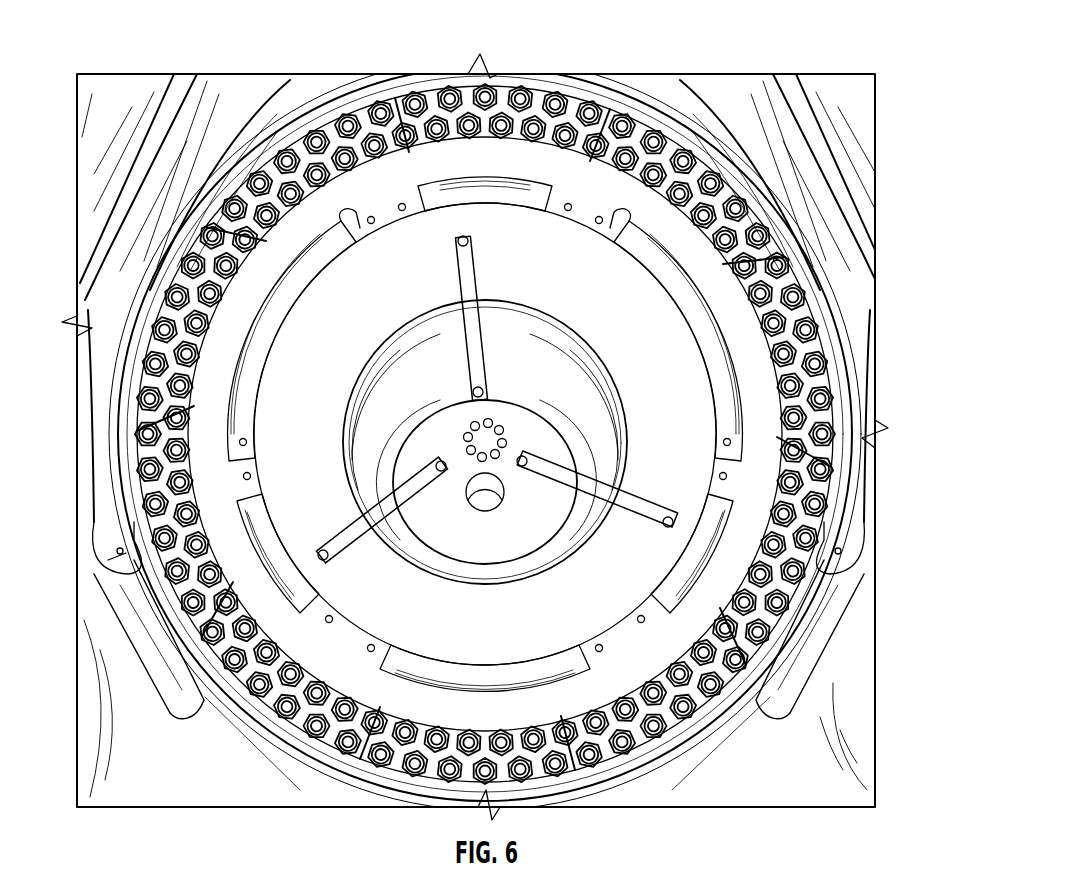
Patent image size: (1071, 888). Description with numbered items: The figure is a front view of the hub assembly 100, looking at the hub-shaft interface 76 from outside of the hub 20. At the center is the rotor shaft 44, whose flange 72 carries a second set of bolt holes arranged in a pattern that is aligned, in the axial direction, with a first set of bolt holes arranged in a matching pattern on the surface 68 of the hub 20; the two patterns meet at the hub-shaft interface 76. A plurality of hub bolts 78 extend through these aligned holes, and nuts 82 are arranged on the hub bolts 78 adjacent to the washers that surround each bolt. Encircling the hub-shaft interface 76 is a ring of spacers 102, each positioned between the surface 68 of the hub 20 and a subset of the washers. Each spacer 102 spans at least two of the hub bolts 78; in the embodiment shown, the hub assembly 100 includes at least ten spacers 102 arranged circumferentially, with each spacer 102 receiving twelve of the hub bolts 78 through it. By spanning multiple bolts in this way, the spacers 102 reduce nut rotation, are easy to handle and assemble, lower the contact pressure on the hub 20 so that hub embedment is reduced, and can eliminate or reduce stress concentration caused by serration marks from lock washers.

The hub assembly 100 is at (902, 92).
The spacer 102 is at (430, 88).
The hub bolt 78 is at (521, 90).
The hub 20 is at (98, 290).
The flange 72 is at (217, 385).
The rotor shaft 44 is at (302, 413).
The hub-shaft interface 76 is at (828, 319).
The surface 68 is at (240, 790).
The nut 82 is at (338, 747).